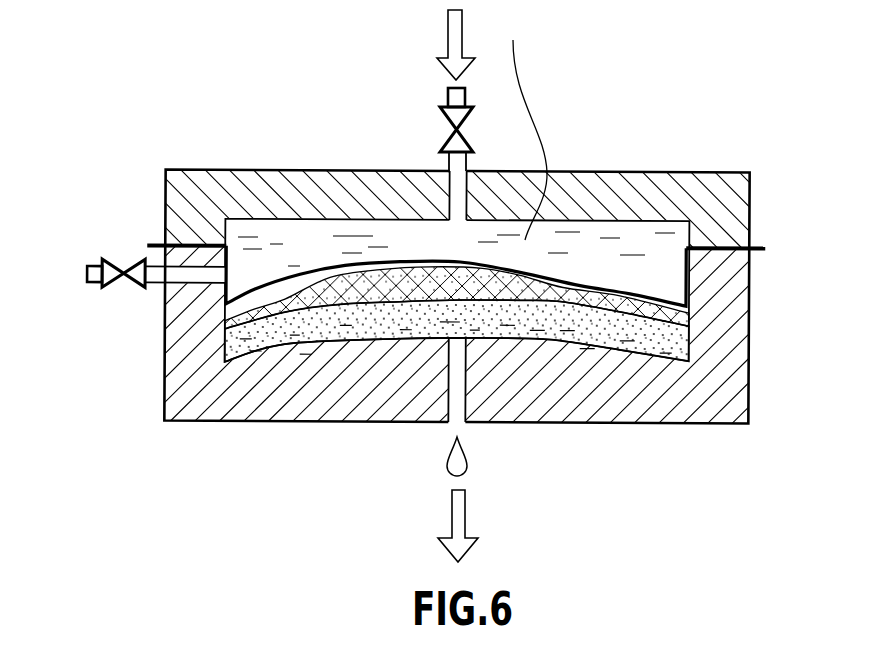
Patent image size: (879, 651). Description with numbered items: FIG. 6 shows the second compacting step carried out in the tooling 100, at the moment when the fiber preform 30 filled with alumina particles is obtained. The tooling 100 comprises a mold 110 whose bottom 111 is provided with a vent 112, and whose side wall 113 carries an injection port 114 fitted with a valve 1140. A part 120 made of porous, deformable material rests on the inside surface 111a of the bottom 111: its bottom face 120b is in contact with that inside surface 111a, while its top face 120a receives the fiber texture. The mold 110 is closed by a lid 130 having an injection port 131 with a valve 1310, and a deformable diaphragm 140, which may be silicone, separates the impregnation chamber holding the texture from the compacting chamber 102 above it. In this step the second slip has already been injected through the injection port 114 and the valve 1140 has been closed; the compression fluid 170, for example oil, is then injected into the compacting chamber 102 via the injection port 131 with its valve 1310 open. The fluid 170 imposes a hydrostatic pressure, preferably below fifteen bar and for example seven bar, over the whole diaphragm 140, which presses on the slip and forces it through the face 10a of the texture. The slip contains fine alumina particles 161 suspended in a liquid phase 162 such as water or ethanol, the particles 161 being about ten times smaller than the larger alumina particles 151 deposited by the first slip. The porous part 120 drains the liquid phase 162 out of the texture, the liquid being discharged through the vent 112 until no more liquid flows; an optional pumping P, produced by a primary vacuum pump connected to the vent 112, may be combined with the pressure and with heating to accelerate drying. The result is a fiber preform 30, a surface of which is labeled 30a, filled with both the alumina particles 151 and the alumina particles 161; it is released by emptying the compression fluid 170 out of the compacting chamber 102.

The tooling 100 is at (152, 135).
The mold 110 is at (752, 343).
The bottom 111 is at (596, 400).
The inside surface of the bottom 111a is at (400, 320).
The vent 112 is at (462, 405).
The side wall 113 is at (712, 278).
The injection port 114 is at (180, 277).
The valve 1140 is at (143, 260).
The part made of porous material 120 is at (623, 333).
The top face 120a is at (343, 283).
The bottom face 120b is at (337, 322).
The lid 130 is at (712, 193).
The injection port 131 is at (458, 163).
The valve 1310 is at (442, 118).
The deformable diaphragm 140 is at (268, 290).
The alumina particles 151 is at (517, 272).
The alumina particles 161 is at (477, 270).
The liquid phase 162 is at (465, 465).
The compression fluid 170 is at (453, 42).
The face of the fiber texture 10a is at (592, 287).
The fiber preform 30 is at (336, 268).
The film surface 30a is at (323, 274).
The compacting chamber 102 is at (662, 230).
The pumping P is at (460, 513).